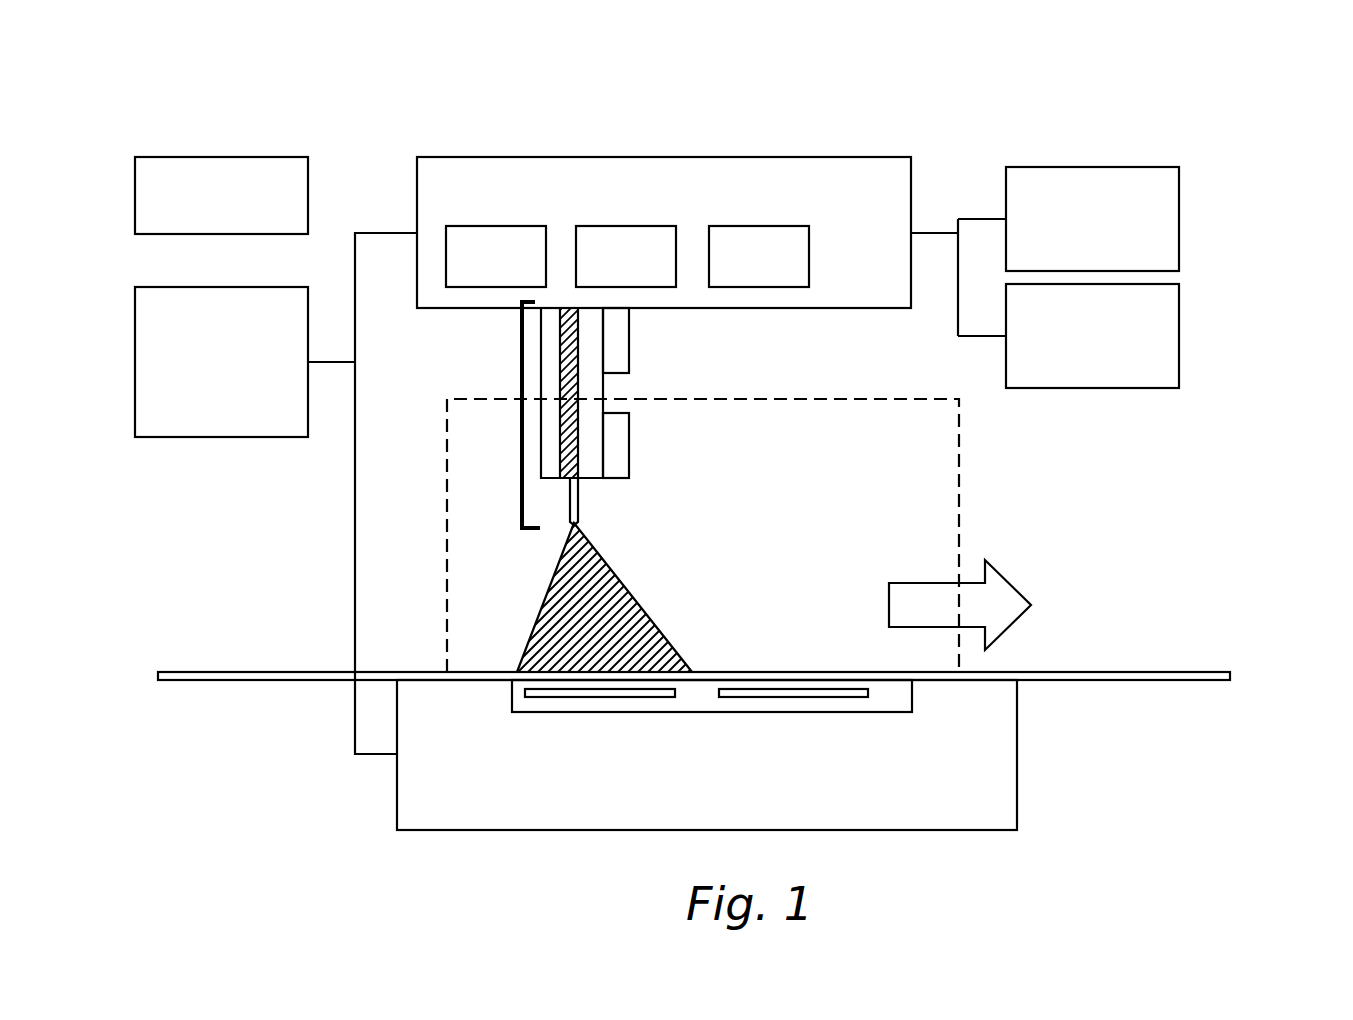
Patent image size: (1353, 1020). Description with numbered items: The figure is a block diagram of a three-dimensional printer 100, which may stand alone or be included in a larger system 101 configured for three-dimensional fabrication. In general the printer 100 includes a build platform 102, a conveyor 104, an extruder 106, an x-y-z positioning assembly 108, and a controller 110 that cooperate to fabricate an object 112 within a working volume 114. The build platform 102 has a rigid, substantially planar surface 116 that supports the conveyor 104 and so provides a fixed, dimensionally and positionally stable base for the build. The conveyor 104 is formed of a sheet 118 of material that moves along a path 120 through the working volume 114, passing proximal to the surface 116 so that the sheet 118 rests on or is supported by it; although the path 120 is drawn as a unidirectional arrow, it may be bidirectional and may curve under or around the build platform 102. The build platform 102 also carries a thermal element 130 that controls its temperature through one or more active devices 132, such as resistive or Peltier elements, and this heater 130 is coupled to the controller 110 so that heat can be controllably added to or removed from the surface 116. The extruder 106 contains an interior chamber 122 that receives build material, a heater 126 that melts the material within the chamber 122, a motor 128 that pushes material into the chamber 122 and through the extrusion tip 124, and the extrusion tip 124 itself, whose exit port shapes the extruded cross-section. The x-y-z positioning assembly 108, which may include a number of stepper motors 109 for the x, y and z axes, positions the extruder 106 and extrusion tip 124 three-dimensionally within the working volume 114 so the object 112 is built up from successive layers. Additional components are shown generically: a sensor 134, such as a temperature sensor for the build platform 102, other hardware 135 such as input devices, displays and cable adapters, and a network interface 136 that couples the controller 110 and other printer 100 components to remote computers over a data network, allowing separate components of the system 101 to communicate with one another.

The printer 100 is at (1090, 526).
The system 101 is at (1260, 124).
The build platform 102 is at (996, 810).
The conveyor 104 is at (225, 672).
The extruder 106 is at (522, 363).
The x-y-z positioning assembly 108 is at (500, 208).
The stepper motors 109 is at (515, 270).
The controller 110 is at (213, 345).
The object 112 is at (627, 588).
The working volume 114 is at (960, 530).
The surface 116 is at (487, 692).
The sheet of material 118 is at (1058, 672).
The path 120 is at (945, 618).
The chamber 122 is at (549, 428).
The extrusion tip 124 is at (570, 501).
The heater 126 is at (630, 440).
The motor 128 is at (630, 340).
The thermal element 130 is at (667, 713).
The active devices 132 is at (815, 702).
The sensor 134 is at (1080, 242).
The other hardware 135 is at (1086, 344).
The network interface 136 is at (203, 210).